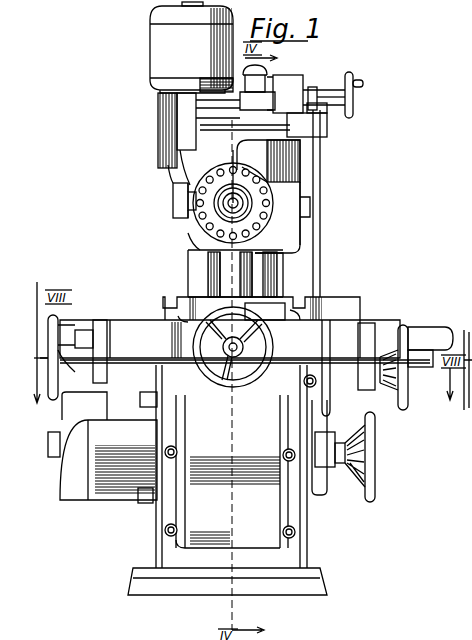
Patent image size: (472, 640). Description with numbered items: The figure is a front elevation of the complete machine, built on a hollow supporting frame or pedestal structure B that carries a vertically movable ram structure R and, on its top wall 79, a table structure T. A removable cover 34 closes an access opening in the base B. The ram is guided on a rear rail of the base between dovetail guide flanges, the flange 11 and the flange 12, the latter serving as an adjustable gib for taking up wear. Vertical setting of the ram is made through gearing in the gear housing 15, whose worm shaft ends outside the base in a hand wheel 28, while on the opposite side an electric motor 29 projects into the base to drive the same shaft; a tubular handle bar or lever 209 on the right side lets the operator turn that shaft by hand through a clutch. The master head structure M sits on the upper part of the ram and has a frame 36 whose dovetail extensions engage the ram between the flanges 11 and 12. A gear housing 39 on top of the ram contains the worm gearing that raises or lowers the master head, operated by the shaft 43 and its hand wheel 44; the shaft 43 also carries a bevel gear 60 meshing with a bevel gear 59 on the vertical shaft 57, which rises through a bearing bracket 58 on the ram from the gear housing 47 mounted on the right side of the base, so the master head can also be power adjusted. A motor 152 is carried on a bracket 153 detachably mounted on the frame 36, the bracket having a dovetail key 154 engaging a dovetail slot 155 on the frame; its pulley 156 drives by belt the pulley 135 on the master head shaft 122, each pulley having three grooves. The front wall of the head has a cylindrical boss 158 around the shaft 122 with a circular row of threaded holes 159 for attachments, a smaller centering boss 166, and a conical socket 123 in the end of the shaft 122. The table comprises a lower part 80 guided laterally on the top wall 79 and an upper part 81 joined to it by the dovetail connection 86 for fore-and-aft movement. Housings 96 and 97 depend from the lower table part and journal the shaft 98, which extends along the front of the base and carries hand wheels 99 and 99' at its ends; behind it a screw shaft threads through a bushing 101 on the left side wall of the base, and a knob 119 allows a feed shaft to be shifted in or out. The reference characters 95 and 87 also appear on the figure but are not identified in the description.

The motor 152 is at (152, 47).
The bracket 153 is at (158, 101).
The pulley 156 is at (160, 110).
The master head structure M is at (173, 213).
The dovetail key 154 is at (175, 212).
The dovetail slot 155 is at (188, 233).
The centering boss 166 is at (220, 190).
The pulley 135 is at (273, 192).
The cylindrical boss 158 is at (268, 212).
The conical socket 123 is at (283, 215).
The vertical shaft 57 is at (325, 188).
The bearing bracket 58 is at (328, 133).
The bevel gear 59 is at (330, 113).
The gear housing 15 is at (257, 87).
The gear housing 39 is at (267, 78).
The shaft 43 is at (323, 97).
The bevel gear 60 is at (315, 97).
The hand wheel 44 is at (355, 100).
The shaft 122 is at (303, 242).
The ram structure R is at (200, 270).
The threaded holes 159 is at (222, 266).
The guide flange 11 is at (193, 284).
The flange 12 is at (273, 284).
The frame 36 is at (320, 245).
The table structure T is at (348, 297).
The upper table part 81 is at (360, 303).
The lower table part 80 is at (347, 320).
The shaft 98 is at (185, 330).
The bushing 101 is at (181, 329).
The dovetail connection 86 is at (292, 318).
The housing 96 is at (103, 367).
The hand wheel 99 is at (58, 357).
The handwheel 95 is at (221, 390).
The hub 87 is at (248, 390).
The knob 119 is at (303, 392).
The gear housing 47 is at (330, 388).
The housing 97 is at (358, 368).
The tubular handle bar or lever 209 is at (323, 419).
The top wall 79 is at (422, 343).
The hand wheel 99' is at (408, 369).
The hand wheel 28 is at (373, 455).
The electric motor 29 is at (112, 488).
The removable cover 34 is at (267, 533).
The supporting frame or pedestal structure B is at (310, 578).